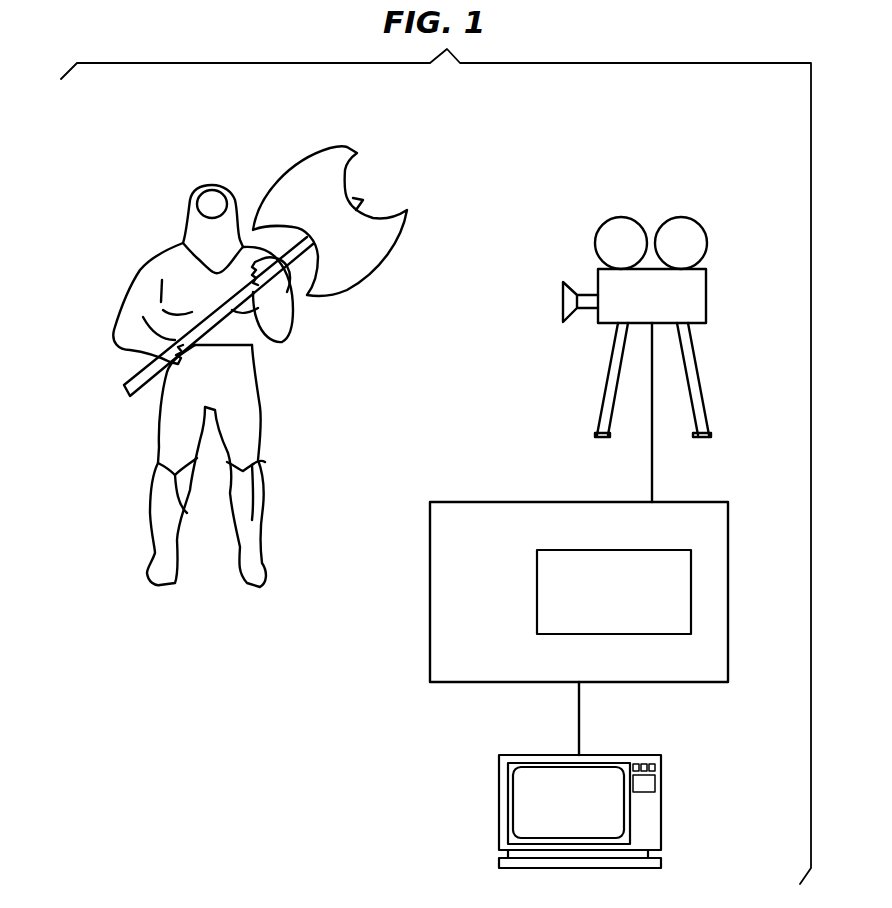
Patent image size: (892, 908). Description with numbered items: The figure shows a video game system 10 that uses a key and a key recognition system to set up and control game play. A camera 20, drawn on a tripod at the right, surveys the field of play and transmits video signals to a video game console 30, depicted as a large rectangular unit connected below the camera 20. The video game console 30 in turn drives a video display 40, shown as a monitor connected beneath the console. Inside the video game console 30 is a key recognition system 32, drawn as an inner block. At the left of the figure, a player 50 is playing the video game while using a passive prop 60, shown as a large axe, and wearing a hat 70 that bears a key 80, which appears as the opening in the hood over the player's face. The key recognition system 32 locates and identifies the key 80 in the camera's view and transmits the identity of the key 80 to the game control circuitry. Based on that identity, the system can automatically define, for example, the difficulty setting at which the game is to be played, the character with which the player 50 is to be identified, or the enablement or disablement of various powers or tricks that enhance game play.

The video game system 10 is at (318, 677).
The camera 20 is at (610, 222).
The video game console 30 is at (430, 575).
The key recognition system 32 is at (537, 571).
The video display 40 is at (499, 805).
The player 50 is at (237, 566).
The passive prop 60 is at (355, 151).
The hat 70 is at (187, 212).
The key 80 is at (209, 197).